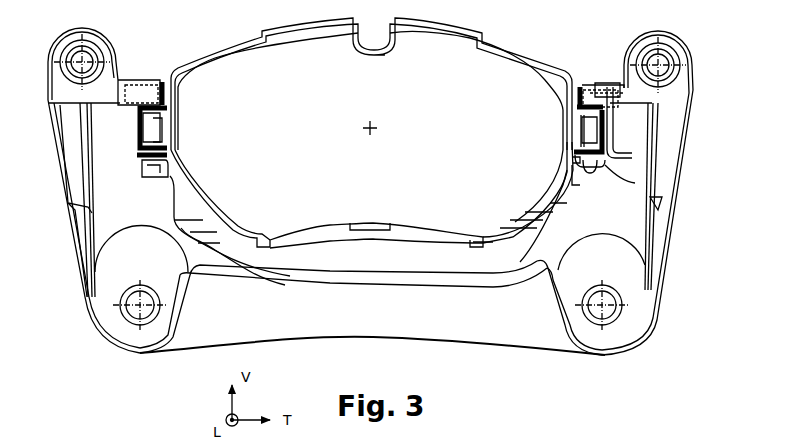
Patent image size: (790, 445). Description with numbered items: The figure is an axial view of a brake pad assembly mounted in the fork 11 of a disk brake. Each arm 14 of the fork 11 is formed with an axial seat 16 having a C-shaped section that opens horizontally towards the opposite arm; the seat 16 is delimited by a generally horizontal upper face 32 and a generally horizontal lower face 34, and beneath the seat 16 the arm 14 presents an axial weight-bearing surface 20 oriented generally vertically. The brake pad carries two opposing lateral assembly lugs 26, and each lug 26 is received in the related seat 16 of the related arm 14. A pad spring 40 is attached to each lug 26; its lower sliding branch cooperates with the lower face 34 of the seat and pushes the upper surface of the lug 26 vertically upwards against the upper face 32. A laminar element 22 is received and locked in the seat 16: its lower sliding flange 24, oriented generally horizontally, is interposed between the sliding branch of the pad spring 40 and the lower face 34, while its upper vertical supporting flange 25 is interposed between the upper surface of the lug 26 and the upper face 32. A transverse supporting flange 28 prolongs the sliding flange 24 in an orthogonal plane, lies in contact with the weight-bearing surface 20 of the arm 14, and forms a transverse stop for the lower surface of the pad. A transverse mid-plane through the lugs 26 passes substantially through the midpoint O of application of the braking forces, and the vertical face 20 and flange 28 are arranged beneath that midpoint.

The fork 11 is at (601, 223).
The arm 14 is at (620, 187).
The axial seat 16 is at (138, 122).
The axial weight-bearing surface 20 is at (580, 190).
The laminar element 22 is at (578, 97).
The lower sliding flange 24 is at (590, 133).
The upper vertical supporting flange 25 is at (590, 125).
The lateral assembly lug 26 is at (148, 118).
The transverse supporting flange 28 is at (570, 155).
The upper face 32 is at (600, 88).
The lower face 34 is at (617, 180).
The pad spring 40 is at (168, 131).